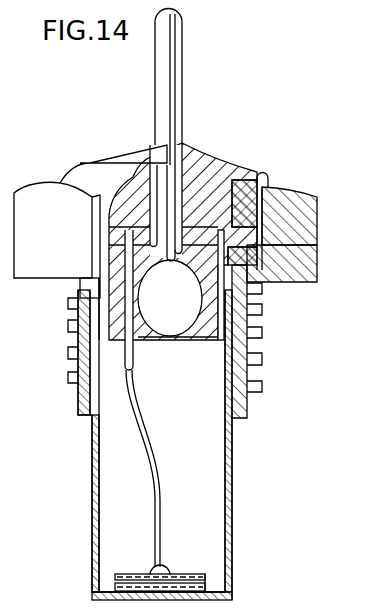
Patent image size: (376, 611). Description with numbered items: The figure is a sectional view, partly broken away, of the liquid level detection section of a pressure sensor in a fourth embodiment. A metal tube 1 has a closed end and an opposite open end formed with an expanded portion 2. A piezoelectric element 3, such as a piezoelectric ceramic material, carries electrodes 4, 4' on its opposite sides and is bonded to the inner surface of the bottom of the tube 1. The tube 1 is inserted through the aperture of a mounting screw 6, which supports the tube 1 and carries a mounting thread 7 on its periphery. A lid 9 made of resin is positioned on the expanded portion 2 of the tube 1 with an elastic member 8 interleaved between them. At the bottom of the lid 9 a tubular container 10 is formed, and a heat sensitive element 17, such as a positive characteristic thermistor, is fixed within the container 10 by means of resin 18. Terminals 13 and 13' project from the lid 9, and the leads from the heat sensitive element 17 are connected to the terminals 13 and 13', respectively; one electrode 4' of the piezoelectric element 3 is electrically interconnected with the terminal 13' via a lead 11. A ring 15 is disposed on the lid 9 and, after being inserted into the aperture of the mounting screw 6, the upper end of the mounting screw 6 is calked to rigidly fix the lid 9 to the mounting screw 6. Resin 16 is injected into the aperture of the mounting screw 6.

The metal tube 1 is at (232, 465).
The expanded portion 2 is at (261, 283).
The piezoelectric element 3 is at (115, 584).
The electrode 4 is at (183, 593).
The electrode 4' is at (237, 566).
The mounting screw 6 is at (293, 213).
The mounting thread 7 is at (278, 351).
The elastic member 8 is at (252, 247).
The lid 9 is at (205, 197).
The container 10 is at (213, 338).
The lead 11 is at (155, 494).
The terminal 13 is at (190, 135).
The terminal 13' is at (68, 348).
The ring 15 is at (260, 196).
The resin 16 is at (218, 172).
The heat sensitive element 17 is at (160, 305).
The resin 18 is at (200, 340).